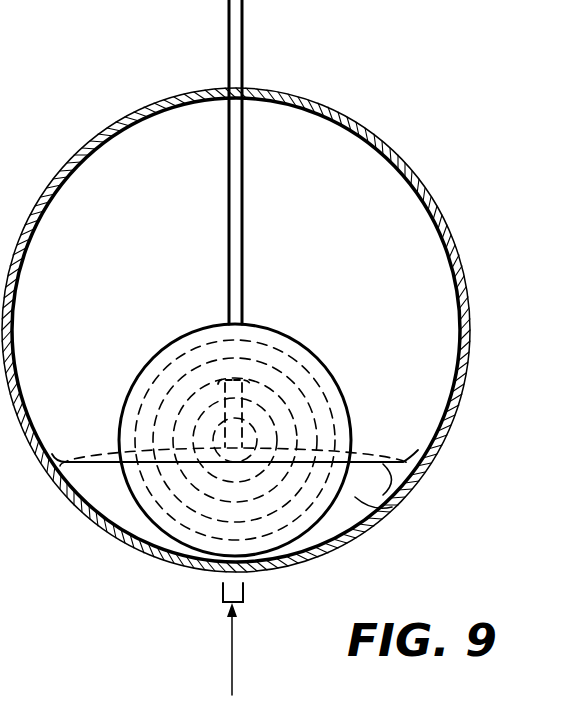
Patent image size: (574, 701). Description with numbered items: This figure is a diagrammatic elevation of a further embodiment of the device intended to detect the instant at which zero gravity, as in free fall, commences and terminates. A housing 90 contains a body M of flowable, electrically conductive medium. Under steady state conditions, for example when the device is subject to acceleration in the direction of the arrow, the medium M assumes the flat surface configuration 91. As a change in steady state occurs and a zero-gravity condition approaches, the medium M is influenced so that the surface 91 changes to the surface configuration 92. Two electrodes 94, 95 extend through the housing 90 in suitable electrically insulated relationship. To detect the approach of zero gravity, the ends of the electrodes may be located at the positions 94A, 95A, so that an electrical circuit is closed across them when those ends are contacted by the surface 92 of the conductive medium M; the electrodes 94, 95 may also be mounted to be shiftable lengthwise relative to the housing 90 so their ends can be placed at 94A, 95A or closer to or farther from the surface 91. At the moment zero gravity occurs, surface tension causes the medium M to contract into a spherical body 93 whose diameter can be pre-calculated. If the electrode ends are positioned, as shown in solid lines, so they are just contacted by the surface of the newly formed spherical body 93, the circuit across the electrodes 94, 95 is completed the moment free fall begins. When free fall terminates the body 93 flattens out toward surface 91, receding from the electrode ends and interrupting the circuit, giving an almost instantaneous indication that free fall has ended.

The housing 90 is at (445, 248).
The surface configuration 91 is at (405, 462).
The surface configuration 92 is at (360, 453).
The spherical body 93 is at (340, 398).
The electrode 94 is at (229, 52).
The electrode 95 is at (242, 50).
The electrode end position 94A is at (225, 408).
The electrode end position 95A is at (245, 408).
The body of flowable medium M is at (380, 516).